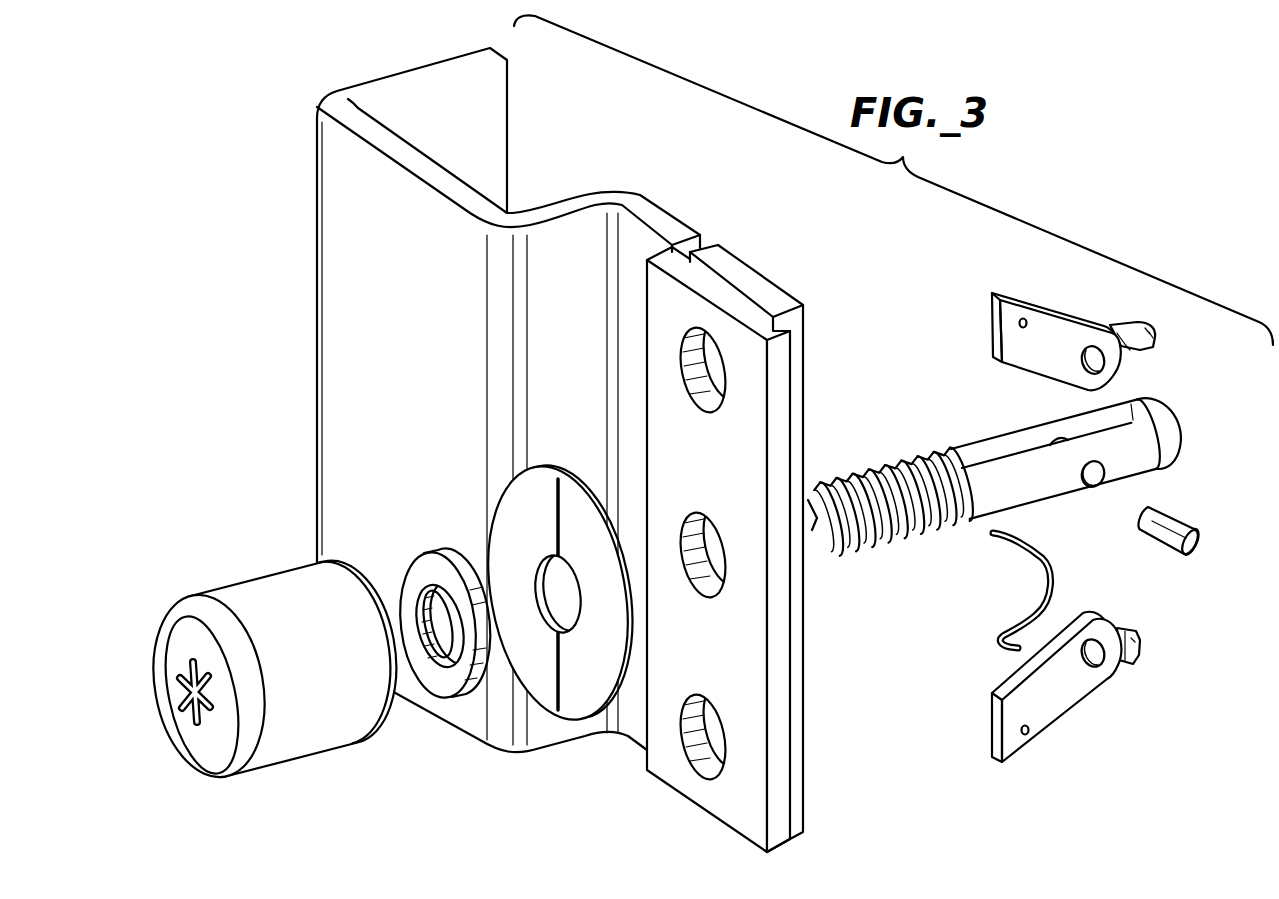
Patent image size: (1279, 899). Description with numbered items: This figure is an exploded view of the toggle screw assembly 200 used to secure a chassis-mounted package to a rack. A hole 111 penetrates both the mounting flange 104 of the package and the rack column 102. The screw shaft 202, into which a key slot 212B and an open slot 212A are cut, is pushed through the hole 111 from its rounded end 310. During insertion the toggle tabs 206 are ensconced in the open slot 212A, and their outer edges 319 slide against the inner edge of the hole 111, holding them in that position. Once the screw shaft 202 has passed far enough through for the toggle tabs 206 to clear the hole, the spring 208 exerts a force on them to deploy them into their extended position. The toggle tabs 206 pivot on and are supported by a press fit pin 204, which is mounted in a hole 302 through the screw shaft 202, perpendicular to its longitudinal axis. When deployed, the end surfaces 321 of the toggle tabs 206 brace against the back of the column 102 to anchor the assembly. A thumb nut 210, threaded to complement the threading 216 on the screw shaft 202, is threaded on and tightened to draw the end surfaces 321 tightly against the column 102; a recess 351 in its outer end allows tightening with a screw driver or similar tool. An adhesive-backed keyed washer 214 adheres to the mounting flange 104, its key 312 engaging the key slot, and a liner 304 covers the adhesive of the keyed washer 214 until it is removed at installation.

The rack column 102 is at (740, 268).
The mounting flange 104 is at (757, 549).
The hole 111 is at (720, 557).
The toggle screw assembly 200 is at (1032, 505).
The screw shaft 202 is at (1097, 466).
The press fit pin 204 is at (1170, 516).
The toggle tabs 206 is at (1037, 519).
The spring 208 is at (1055, 570).
The thumb nut 210 is at (266, 681).
The open slot 212A is at (1017, 445).
The key slot 212B is at (858, 480).
The keyed washer 214 is at (377, 637).
The threading 216 is at (905, 536).
The hole 302 is at (1100, 486).
The liner 304 is at (578, 700).
The rounded end 310 is at (1172, 447).
The key 312 is at (420, 607).
The outer edges 319 is at (1018, 298).
The end surfaces 321 is at (990, 335).
The recess 351 is at (180, 688).